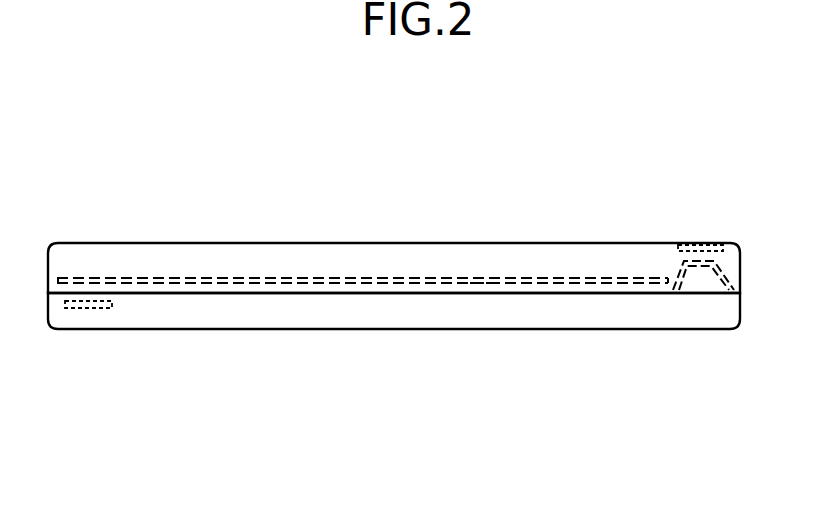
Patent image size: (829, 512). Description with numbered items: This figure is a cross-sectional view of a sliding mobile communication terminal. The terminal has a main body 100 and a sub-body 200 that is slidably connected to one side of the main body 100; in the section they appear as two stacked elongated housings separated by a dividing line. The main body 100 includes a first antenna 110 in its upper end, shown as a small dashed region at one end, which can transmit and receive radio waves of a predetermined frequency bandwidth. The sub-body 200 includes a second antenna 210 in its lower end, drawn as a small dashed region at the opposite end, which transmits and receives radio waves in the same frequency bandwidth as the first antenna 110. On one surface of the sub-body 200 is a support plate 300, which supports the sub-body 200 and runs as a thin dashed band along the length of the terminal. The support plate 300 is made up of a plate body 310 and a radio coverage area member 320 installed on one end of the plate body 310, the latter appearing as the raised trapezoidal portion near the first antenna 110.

The main body 100 is at (460, 257).
The first antenna 110 is at (700, 245).
The sub-body 200 is at (355, 318).
The second antenna 210 is at (90, 308).
The support plate 300 is at (540, 268).
The plate body 310 is at (484, 283).
The radio coverage area member 320 is at (705, 262).